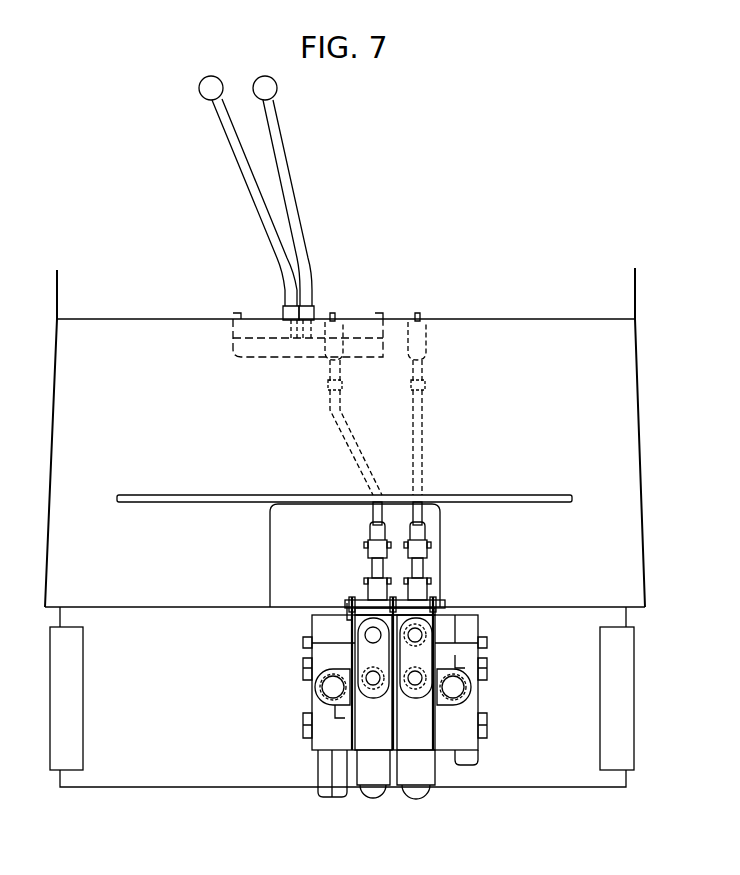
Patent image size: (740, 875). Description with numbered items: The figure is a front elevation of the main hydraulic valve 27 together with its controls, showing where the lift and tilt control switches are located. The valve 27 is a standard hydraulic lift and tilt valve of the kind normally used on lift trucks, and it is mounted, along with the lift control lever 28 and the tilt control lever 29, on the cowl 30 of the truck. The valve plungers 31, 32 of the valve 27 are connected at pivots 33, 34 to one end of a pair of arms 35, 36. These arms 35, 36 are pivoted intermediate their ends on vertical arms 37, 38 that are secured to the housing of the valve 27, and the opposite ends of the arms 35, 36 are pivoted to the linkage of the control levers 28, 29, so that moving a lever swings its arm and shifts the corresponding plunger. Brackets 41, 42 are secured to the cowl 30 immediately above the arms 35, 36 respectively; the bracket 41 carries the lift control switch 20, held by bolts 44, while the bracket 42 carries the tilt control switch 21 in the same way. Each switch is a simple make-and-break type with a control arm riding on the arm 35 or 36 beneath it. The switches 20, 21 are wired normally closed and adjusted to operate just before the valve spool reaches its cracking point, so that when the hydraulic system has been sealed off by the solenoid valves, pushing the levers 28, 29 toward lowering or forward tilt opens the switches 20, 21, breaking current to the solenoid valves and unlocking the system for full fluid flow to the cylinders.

The lift control switch 20 is at (370, 530).
The tilt control switch 21 is at (422, 545).
The main hydraulic valve 27 is at (470, 630).
The lift control lever 28 is at (304, 237).
The tilt control lever 29 is at (268, 237).
The cowl 30 is at (202, 568).
The valve plunger 31 is at (428, 592).
The valve plunger 32 is at (368, 592).
The pivot connection 33 is at (430, 580).
The pivot connection 34 is at (366, 580).
The arm 35 is at (367, 556).
The arm 36 is at (426, 560).
The vertical arm 37 is at (446, 601).
The vertical arm 38 is at (353, 619).
The bracket 41 is at (385, 507).
The bracket 42 is at (427, 505).
The bolts 44 is at (366, 545).